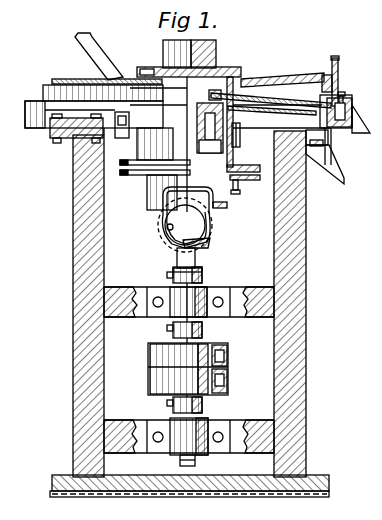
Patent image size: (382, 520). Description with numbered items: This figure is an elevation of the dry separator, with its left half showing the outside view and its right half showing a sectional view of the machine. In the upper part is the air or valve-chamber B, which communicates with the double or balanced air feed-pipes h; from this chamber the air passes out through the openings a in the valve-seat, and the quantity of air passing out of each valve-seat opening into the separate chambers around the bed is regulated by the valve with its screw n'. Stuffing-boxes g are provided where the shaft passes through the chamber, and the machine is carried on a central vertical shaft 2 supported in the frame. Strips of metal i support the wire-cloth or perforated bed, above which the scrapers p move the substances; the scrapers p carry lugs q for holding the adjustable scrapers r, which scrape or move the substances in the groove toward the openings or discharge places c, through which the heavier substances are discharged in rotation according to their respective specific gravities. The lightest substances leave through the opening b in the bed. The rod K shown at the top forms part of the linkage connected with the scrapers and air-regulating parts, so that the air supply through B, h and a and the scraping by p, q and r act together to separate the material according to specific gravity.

The openings in the valve-seat a is at (122, 125).
The air or valve-chamber B is at (215, 122).
The screw n' is at (242, 187).
The air feed-pipe h is at (192, 219).
The stuffing-box g is at (201, 181).
The shaft 2 is at (187, 260).
The scraper p is at (282, 76).
The connecting rod K is at (270, 86).
The strip of metal i is at (272, 116).
The lug q is at (321, 82).
The adjustable scraper r is at (338, 81).
The discharge opening c is at (345, 114).
The opening in the bed b is at (325, 162).